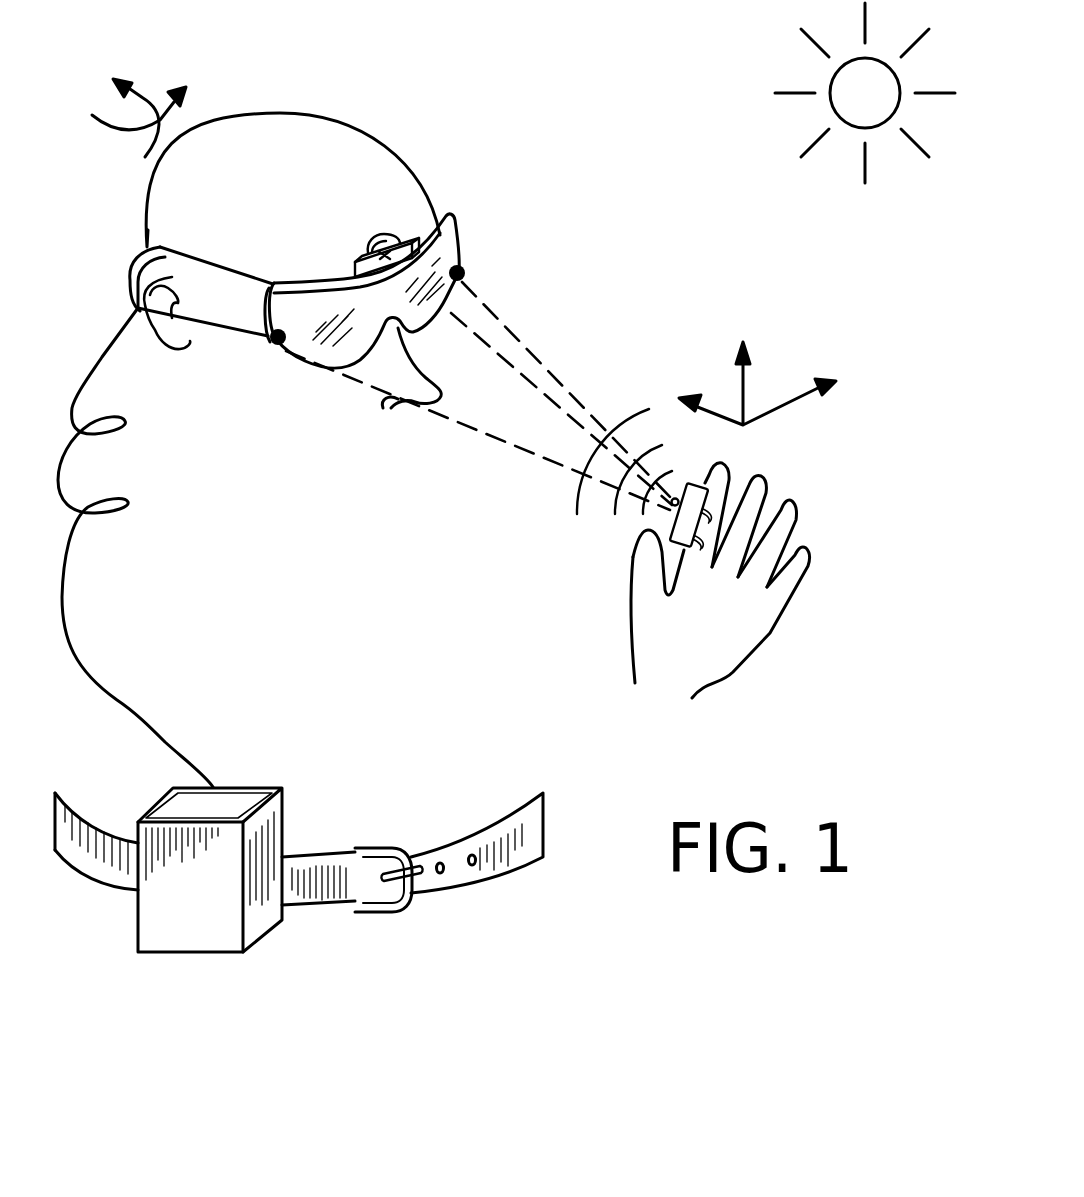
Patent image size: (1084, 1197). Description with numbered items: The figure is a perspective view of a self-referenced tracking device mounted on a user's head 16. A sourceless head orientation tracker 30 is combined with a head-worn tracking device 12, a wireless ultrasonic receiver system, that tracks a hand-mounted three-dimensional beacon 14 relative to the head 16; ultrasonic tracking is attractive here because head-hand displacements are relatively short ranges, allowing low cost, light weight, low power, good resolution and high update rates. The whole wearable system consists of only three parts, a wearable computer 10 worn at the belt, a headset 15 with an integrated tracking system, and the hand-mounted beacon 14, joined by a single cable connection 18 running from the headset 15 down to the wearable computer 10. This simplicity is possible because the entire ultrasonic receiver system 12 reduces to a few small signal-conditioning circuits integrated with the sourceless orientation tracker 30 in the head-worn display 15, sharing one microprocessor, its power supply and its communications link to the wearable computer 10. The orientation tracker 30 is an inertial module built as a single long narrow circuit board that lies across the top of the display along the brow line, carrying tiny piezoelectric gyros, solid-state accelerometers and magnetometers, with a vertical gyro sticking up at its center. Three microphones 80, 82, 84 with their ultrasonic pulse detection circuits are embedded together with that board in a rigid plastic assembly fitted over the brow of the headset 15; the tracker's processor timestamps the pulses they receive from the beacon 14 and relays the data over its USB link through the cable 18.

The wearable computer 10 is at (187, 940).
The head-worn tracking device 12 is at (344, 294).
The hand-mounted 3D beacon 14 is at (669, 541).
The headset 15 is at (346, 355).
The head 16 is at (353, 133).
The cable connection 18 is at (142, 715).
The sourceless head orientation tracker 30 is at (350, 268).
The microphone 80 is at (272, 343).
The microphone 82 is at (382, 236).
The microphone 84 is at (469, 237).